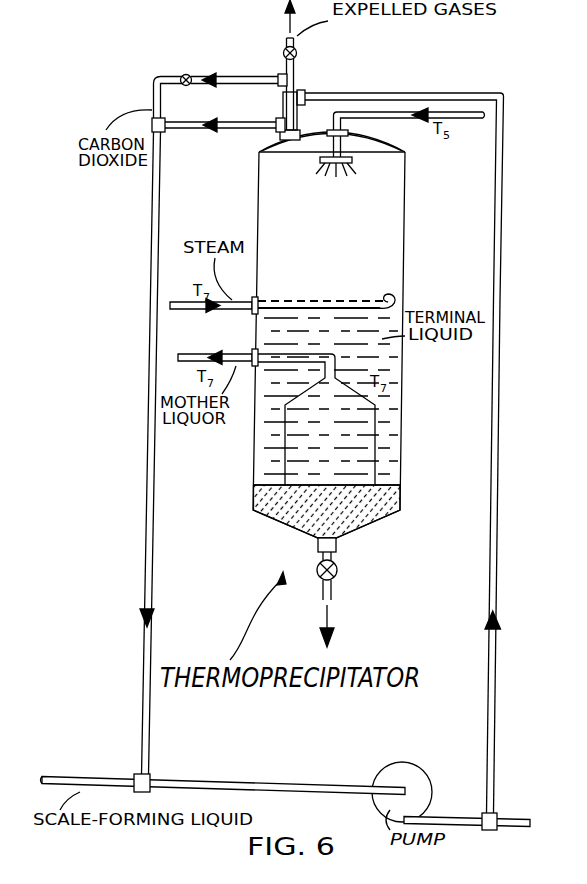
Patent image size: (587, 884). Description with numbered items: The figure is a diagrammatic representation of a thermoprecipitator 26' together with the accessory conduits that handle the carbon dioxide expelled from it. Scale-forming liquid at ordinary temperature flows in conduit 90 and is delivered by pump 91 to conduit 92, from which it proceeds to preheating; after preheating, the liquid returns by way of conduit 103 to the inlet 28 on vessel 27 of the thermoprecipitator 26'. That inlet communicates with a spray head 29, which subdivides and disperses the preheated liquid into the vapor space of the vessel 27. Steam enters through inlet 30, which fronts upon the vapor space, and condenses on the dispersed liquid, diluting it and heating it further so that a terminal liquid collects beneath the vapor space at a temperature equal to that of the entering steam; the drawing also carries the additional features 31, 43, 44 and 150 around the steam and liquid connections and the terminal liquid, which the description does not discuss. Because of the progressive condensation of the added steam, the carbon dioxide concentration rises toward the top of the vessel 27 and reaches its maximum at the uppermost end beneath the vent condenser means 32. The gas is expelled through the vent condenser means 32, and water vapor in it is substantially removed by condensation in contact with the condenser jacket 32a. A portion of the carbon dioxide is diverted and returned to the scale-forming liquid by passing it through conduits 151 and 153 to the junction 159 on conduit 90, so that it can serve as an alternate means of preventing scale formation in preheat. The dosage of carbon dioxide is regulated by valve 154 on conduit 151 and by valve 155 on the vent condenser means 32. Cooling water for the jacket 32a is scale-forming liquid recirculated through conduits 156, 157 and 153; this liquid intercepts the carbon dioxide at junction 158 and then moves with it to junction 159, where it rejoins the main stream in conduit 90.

The thermoprecipitator 26' is at (295, 389).
The vessel 27 is at (405, 206).
The inlet 28 is at (343, 129).
The spray head 29 is at (356, 160).
The inlet 30 is at (254, 299).
The mother liquor inlet 31 is at (256, 350).
The vent condenser means 32 is at (296, 70).
The condenser jacket 32a is at (283, 101).
The steam line 43 is at (186, 300).
The mother liquor line 44 is at (192, 355).
The conduit 90 is at (375, 789).
The pump 91 is at (431, 786).
The conduit 92 is at (504, 815).
The conduit 103 is at (458, 112).
The terminal liquid level hook 150 is at (403, 290).
The conduit 151 is at (167, 77).
The conduit 153 is at (153, 226).
The valve 154 is at (190, 75).
The valve 155 is at (298, 53).
The conduit 156 is at (484, 689).
The conduit 157 is at (188, 130).
The junction 158 is at (165, 121).
The junction 159 is at (134, 780).